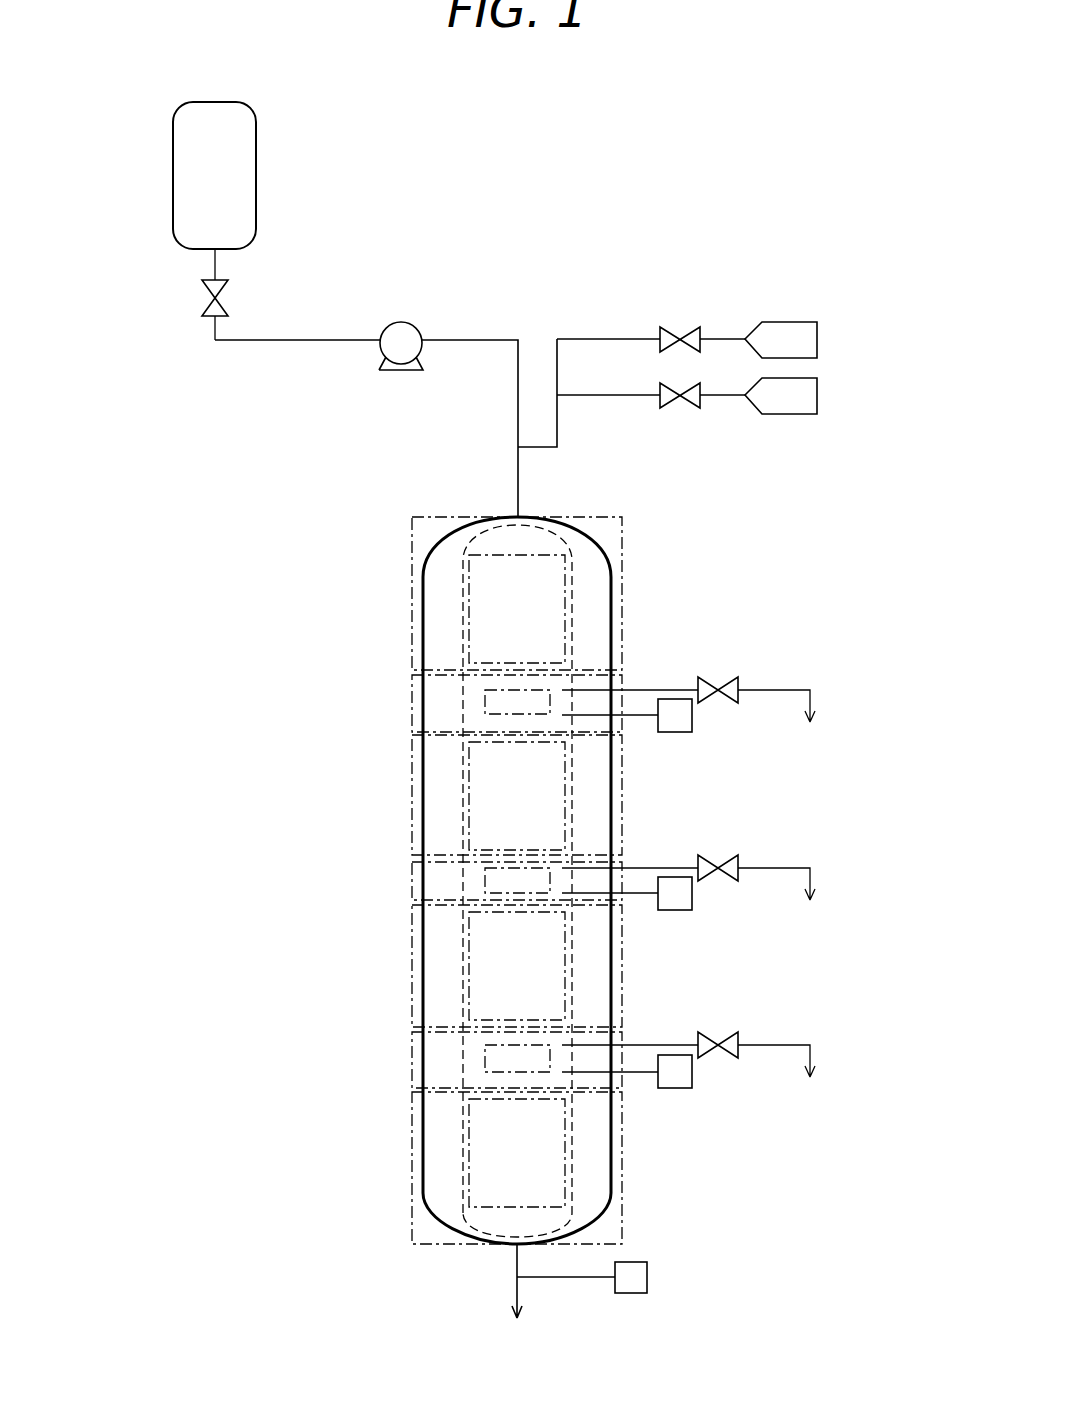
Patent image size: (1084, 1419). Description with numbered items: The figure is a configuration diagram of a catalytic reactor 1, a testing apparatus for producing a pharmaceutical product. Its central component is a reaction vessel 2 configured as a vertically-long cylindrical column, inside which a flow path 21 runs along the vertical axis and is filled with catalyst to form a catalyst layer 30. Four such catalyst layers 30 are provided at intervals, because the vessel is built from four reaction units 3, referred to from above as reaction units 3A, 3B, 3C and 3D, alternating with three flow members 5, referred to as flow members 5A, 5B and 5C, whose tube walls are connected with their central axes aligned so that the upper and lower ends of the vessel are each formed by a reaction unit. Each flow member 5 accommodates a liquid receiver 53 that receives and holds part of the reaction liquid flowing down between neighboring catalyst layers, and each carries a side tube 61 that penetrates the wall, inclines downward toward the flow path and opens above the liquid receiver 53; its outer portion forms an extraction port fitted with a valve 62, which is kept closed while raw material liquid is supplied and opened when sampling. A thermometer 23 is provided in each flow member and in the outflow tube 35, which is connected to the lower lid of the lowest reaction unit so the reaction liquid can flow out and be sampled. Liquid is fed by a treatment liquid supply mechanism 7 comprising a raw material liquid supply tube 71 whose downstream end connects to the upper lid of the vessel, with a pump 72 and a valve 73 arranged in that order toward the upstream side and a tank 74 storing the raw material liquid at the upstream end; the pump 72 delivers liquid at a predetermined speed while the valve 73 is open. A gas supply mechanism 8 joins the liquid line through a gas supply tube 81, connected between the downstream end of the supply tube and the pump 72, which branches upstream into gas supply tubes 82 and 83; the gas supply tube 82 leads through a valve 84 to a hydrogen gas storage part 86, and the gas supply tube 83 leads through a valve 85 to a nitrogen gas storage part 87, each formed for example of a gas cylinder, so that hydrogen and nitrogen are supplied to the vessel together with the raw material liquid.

The catalytic reactor 1 is at (326, 1258).
The reaction vessel 2 is at (441, 547).
The flow path 21 is at (574, 584).
The thermometer 23 is at (676, 733).
The reaction unit 3 is at (427, 880).
The reaction unit 3A is at (412, 583).
The reaction unit 3B is at (412, 813).
The reaction unit 3C is at (412, 978).
The reaction unit 3D is at (412, 1179).
The catalyst layer 30 is at (566, 647).
The outflow tube 35 is at (513, 1265).
The flow member 5 is at (427, 881).
The flow member 5A is at (412, 708).
The flow member 5B is at (412, 885).
The flow member 5C is at (412, 1063).
The liquid receiver 53 is at (484, 703).
The side tube 61 is at (798, 689).
The valve 62 is at (722, 678).
The treatment liquid supply mechanism 7 is at (406, 213).
The raw material liquid supply tube 71 is at (284, 343).
The pump 72 is at (380, 352).
The valve 73 is at (229, 298).
The tank 74 is at (257, 185).
The gas supply mechanism 8 is at (774, 212).
The gas supply tube 81 is at (560, 433).
The gas supply tube 82 is at (612, 338).
The gas supply tube 83 is at (624, 396).
The valve 84 is at (685, 326).
The valve 85 is at (682, 409).
The H2 gas storage part 86 is at (806, 322).
The N2 gas storage part 87 is at (806, 414).